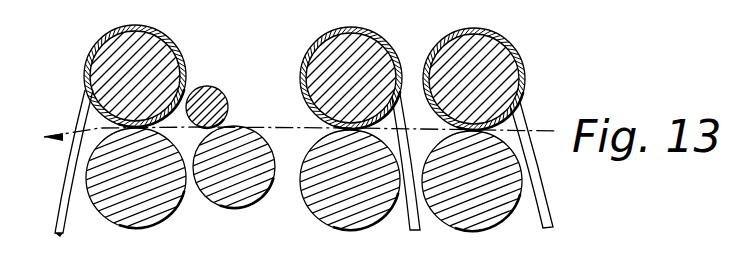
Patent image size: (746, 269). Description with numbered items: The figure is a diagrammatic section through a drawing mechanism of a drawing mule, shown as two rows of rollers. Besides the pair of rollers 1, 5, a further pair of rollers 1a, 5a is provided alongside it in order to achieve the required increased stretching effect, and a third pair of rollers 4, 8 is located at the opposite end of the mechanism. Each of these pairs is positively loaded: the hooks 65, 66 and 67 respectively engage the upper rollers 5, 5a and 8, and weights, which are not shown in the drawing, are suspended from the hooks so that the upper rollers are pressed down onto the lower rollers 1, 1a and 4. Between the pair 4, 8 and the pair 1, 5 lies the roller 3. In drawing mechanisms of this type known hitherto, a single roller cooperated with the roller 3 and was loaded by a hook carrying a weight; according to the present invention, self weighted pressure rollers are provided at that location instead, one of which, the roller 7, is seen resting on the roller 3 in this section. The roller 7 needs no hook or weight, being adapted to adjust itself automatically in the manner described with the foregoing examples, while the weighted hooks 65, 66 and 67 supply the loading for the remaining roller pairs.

The roller 1 is at (328, 220).
The roller 1a is at (490, 218).
The roller 3 is at (238, 197).
The roller 4 is at (123, 216).
The upper roller 5 is at (388, 50).
The upper roller 5a is at (507, 45).
The self weighted pressure roller 7 is at (218, 88).
The upper roller 8 is at (97, 50).
The hook 65 is at (413, 222).
The hook 66 is at (547, 212).
The hook 67 is at (58, 210).